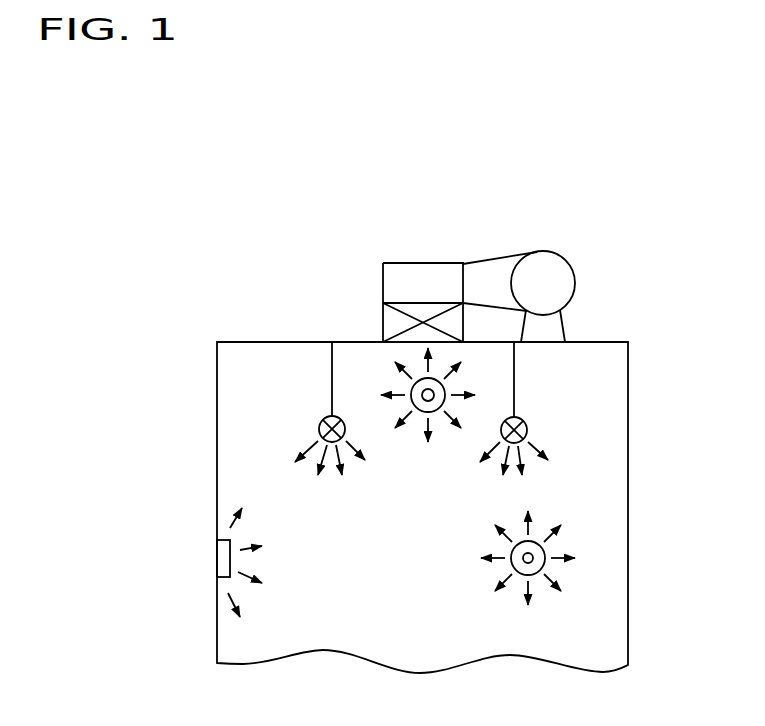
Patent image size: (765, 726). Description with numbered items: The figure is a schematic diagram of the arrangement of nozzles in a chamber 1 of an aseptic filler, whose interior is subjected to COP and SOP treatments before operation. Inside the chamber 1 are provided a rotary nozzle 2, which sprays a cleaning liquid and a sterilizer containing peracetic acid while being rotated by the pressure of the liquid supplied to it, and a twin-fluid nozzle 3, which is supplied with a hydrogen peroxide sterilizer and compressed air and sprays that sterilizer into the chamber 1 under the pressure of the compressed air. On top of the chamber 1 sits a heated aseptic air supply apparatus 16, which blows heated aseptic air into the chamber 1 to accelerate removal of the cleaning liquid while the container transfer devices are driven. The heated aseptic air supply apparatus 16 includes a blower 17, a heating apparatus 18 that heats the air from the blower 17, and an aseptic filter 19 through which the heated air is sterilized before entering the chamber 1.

The chamber 1 is at (266, 340).
The rotary nozzle 2 is at (332, 445).
The twin-fluid nozzle 3 is at (450, 479).
The heated aseptic air supply apparatus 16 is at (487, 238).
The blower 17 is at (561, 257).
The heating apparatus 18 is at (403, 263).
The aseptic filter 19 is at (382, 327).